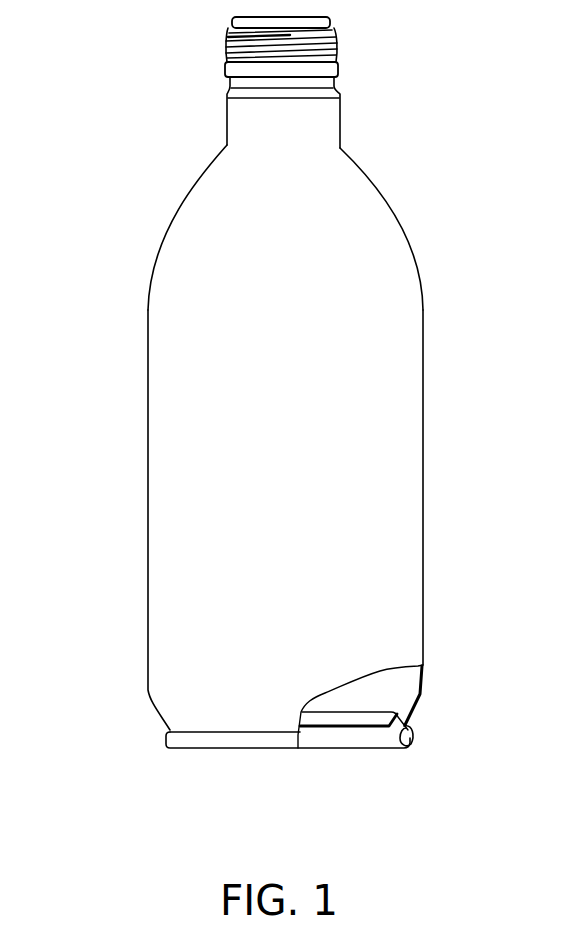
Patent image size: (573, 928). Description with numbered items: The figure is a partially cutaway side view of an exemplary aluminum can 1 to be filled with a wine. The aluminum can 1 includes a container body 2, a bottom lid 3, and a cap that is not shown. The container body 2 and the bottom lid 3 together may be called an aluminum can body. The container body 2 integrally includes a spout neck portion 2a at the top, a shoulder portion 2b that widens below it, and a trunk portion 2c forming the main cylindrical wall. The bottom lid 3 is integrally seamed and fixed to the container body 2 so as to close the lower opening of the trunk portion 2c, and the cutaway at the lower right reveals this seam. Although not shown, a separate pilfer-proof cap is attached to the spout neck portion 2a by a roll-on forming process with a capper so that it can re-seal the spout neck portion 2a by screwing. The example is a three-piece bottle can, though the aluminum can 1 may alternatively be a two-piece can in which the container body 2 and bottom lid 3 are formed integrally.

The aluminum can 1 is at (273, 428).
The container body 2 is at (273, 373).
The spout neck portion 2a is at (227, 110).
The shoulder portion 2b is at (180, 199).
The trunk portion 2c is at (148, 462).
The bottom lid 3 is at (355, 730).